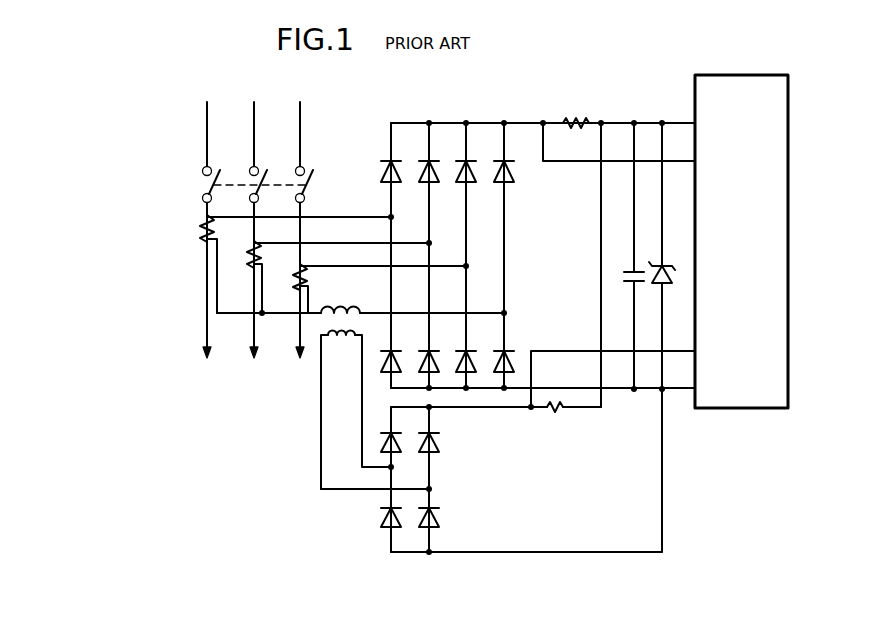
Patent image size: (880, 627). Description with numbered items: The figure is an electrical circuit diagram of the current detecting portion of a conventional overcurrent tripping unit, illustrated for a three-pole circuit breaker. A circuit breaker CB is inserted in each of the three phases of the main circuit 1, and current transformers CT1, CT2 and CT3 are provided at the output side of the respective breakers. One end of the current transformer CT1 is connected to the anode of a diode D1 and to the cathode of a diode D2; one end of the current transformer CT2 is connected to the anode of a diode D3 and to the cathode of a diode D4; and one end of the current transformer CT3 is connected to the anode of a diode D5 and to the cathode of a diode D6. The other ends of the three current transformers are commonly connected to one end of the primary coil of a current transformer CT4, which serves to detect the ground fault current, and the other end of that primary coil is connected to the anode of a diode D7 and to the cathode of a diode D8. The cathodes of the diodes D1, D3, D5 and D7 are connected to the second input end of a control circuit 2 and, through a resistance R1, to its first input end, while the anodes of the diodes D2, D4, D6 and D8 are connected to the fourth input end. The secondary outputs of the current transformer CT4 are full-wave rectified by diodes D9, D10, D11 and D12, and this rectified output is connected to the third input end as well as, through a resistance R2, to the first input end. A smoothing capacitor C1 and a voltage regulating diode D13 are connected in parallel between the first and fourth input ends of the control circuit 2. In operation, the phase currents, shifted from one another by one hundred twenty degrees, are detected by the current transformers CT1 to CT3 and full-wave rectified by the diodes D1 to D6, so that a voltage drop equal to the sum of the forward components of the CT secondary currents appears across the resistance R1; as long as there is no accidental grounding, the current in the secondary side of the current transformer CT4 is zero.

The main circuit 1 is at (262, 88).
The control circuit 2 is at (758, 74).
The circuit breaker CB is at (313, 186).
The current transformer CT1 is at (205, 232).
The current transformer CT2 is at (249, 265).
The current transformer CT3 is at (297, 278).
The current transformer CT4 is at (349, 306).
The diode D1 is at (396, 184).
The diode D2 is at (396, 349).
The diode D3 is at (434, 184).
The diode D4 is at (434, 349).
The diode D5 is at (471, 184).
The diode D6 is at (471, 349).
The diode D7 is at (509, 184).
The diode D8 is at (509, 349).
The diode D9 is at (386, 430).
The diode D10 is at (379, 519).
The diode D11 is at (441, 440).
The diode D12 is at (441, 518).
The voltage regulating diode D13 is at (668, 286).
The resistance R1 is at (584, 112).
The resistance R2 is at (556, 412).
The smoothing capacitor C1 is at (626, 272).